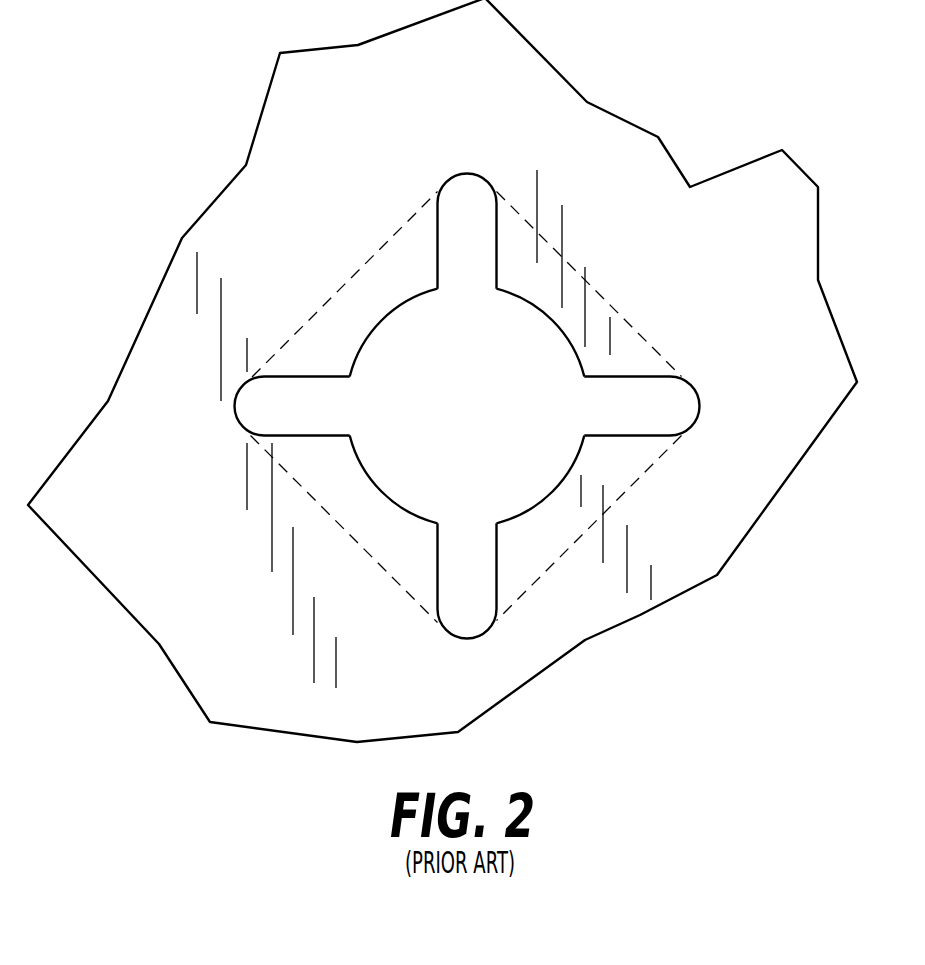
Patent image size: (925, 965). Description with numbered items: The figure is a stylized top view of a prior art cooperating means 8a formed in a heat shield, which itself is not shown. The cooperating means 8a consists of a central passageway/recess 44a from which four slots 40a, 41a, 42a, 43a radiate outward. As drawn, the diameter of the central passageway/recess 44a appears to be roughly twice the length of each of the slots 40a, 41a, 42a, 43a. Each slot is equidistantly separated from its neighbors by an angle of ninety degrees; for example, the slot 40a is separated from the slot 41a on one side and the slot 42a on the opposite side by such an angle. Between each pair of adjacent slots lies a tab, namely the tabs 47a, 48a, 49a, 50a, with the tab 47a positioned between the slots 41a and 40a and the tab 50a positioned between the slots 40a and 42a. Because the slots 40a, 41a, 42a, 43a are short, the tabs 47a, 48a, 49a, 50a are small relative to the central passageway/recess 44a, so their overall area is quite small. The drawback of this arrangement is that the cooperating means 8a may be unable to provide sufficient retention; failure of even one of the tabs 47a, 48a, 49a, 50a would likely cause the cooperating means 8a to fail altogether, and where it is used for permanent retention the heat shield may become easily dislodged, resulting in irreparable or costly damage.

The cooperating means 8a is at (206, 94).
The slot 40a is at (263, 412).
The slot 41a is at (467, 200).
The slot 42a is at (467, 615).
The slot 43a is at (672, 407).
The central passageway/recess 44a is at (485, 417).
The tab 47a is at (385, 285).
The tab 48a is at (595, 317).
The tab 49a is at (608, 458).
The tab 50a is at (397, 535).